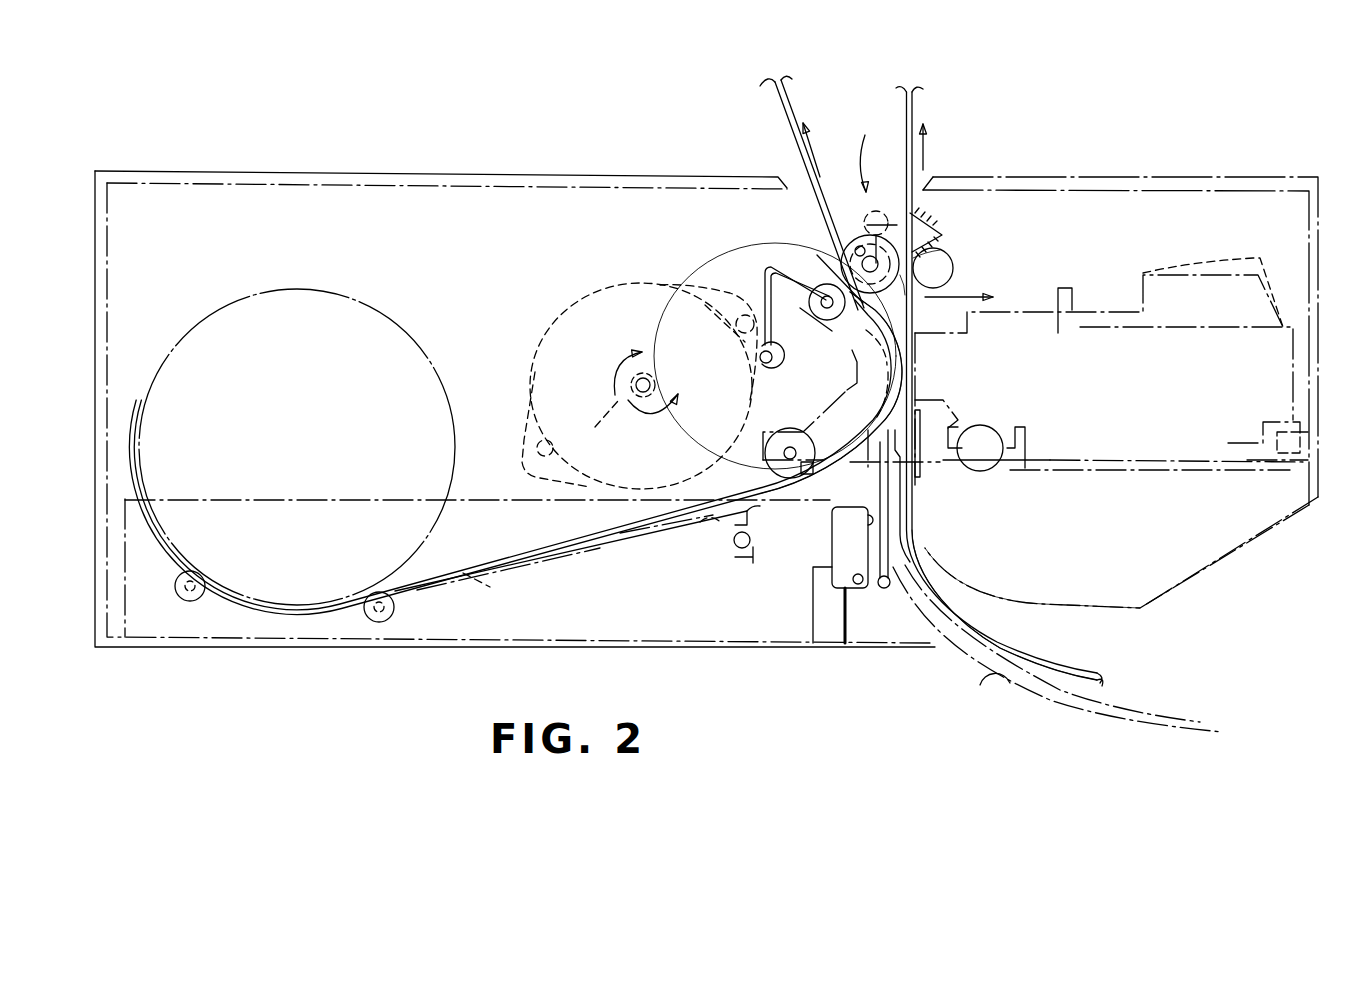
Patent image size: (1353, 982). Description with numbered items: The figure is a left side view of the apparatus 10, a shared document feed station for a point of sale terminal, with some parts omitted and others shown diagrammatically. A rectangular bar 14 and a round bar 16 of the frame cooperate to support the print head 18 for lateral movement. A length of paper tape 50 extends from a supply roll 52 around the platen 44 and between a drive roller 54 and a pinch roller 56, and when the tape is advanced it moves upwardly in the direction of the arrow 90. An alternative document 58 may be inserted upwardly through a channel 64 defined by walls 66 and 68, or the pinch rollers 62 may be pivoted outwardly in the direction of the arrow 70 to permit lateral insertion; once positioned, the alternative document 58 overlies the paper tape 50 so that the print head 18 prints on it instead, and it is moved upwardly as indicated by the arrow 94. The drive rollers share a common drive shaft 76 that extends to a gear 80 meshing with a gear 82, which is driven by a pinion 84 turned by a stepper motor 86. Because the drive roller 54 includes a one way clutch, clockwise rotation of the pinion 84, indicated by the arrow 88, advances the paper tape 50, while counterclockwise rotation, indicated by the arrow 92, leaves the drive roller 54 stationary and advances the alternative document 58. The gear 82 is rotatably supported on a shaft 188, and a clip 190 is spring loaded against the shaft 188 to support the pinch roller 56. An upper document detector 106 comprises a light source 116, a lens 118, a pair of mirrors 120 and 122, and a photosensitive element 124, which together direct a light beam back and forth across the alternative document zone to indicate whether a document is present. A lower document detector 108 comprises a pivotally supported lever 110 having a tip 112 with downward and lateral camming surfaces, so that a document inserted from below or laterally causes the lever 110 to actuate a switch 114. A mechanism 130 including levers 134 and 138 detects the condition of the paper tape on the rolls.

The apparatus 10 is at (670, 150).
The rectangular bar 14 is at (1292, 443).
The round bar 16 is at (977, 463).
The print head 18 is at (1118, 300).
The platen 44 is at (847, 368).
The length of paper tape 50 is at (778, 117).
The supply roll 52 is at (363, 303).
The drive roller 54 is at (843, 257).
The pinch roller 56 is at (838, 298).
The alternative document 58 is at (903, 107).
The pinch rollers 62 is at (947, 252).
The channel 64 is at (1095, 653).
The wall 66 is at (1042, 603).
The wall 68 is at (1003, 680).
The arrow 70 is at (967, 297).
The drive shaft 76 is at (907, 327).
The gear 80 is at (838, 338).
The gear 82 is at (680, 280).
The pinion 84 is at (612, 408).
The stepper motor 86 is at (558, 330).
The arrow 88 is at (612, 362).
The arrow 90 is at (810, 150).
The arrow 92 is at (643, 420).
The arrow 94 is at (928, 147).
The upper document detector 106 is at (869, 151).
The lower document detector 108 is at (858, 597).
The lever 110 is at (885, 500).
The tip 112 is at (890, 462).
The switch 114 is at (860, 540).
The light source 116 is at (860, 247).
The lens 118 is at (907, 293).
The mirror 120 is at (953, 260).
The mirror 122 is at (920, 227).
The photosensitive element 124 is at (878, 212).
The mechanism 130 is at (638, 553).
The lever 134 is at (757, 543).
The lever 138 is at (533, 567).
The shaft 188 is at (760, 355).
The clip 190 is at (742, 250).